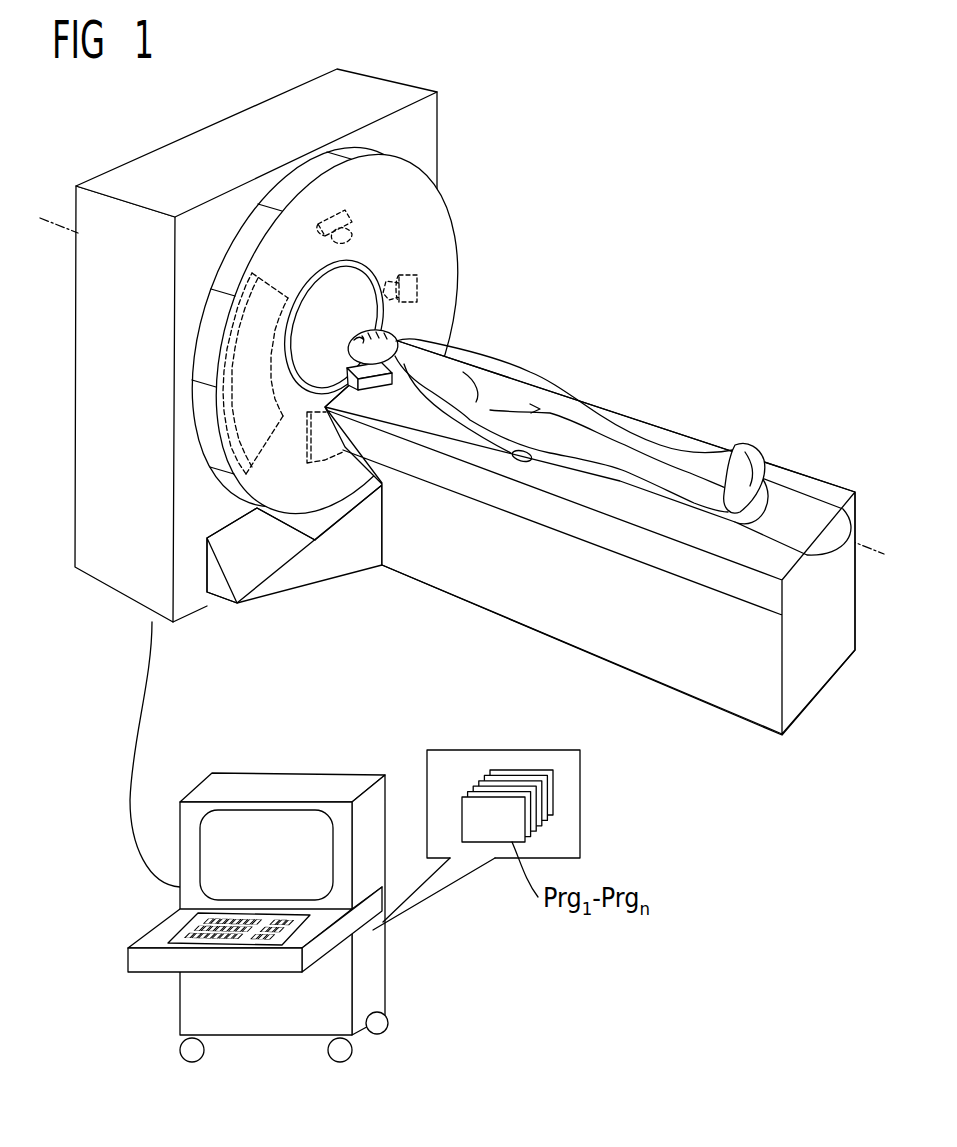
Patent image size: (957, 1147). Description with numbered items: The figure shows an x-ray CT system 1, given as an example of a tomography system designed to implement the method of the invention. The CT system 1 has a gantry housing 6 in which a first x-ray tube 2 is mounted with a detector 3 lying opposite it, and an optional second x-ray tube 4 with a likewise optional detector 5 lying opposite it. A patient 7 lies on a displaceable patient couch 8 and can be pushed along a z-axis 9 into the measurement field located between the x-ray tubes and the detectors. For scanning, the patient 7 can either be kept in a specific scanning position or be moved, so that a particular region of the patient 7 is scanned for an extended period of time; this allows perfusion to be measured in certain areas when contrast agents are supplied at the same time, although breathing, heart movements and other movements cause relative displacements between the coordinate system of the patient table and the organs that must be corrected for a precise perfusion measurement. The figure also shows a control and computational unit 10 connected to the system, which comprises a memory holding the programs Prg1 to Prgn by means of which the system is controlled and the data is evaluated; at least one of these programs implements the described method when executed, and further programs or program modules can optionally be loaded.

The x-ray CT system 1 is at (624, 254).
The first x-ray tube 2 is at (361, 222).
The detector 3 is at (322, 447).
The second x-ray tube 4 is at (420, 291).
The detector 5 is at (262, 448).
The gantry housing 6 is at (104, 566).
The patient 7 is at (363, 299).
The patient couch 8 is at (565, 614).
The z-axis 9 is at (880, 546).
The control and computational unit 10 is at (368, 982).